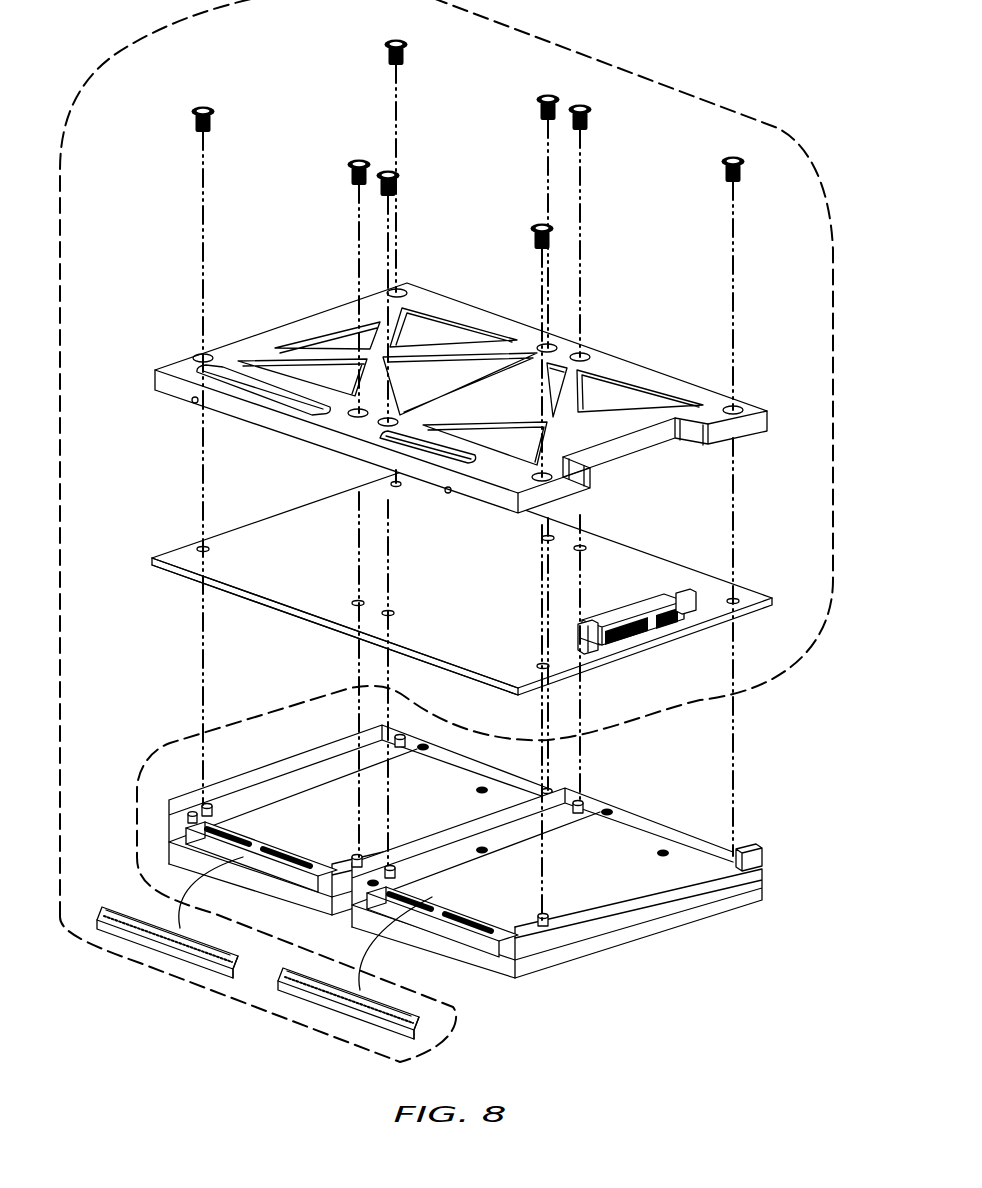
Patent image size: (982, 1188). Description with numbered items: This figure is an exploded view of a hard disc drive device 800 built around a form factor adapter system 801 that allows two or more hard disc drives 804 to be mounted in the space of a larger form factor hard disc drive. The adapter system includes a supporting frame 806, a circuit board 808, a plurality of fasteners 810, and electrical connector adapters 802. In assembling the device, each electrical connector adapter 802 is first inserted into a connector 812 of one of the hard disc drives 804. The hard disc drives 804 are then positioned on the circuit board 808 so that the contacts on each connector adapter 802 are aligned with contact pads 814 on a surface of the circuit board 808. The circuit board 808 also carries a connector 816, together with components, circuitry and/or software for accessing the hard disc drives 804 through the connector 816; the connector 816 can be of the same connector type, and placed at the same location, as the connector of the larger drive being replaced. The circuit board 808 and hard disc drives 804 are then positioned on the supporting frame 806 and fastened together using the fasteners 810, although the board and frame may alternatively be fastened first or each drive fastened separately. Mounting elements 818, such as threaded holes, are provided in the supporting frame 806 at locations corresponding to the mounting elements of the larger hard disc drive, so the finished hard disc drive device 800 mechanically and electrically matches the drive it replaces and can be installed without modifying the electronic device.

The hard disc drive device 800 is at (770, 950).
The form factor adapter system 801 is at (728, 706).
The electrical connector adapter 802 is at (138, 951).
The hard disc drive 804 is at (465, 871).
The supporting frame 806 is at (449, 399).
The circuit board 808 is at (462, 582).
The fastener 810 is at (180, 53).
The connector 812 is at (270, 878).
The contact pad 814 is at (247, 613).
The connector 816 is at (675, 644).
The mounting element 818 is at (496, 302).